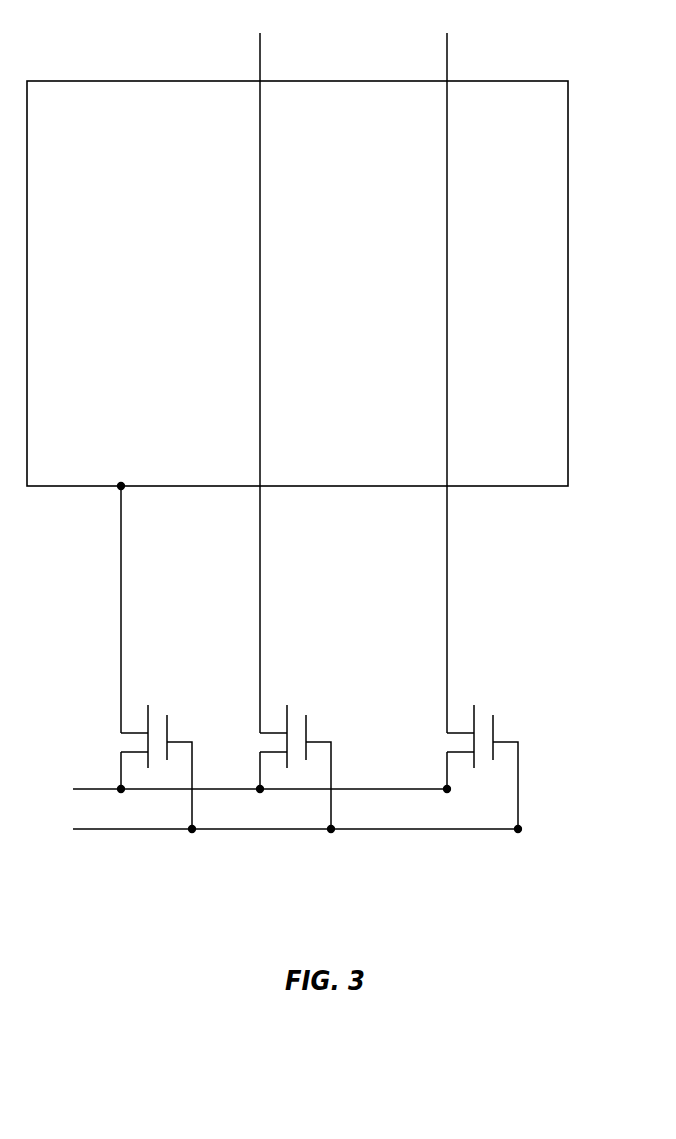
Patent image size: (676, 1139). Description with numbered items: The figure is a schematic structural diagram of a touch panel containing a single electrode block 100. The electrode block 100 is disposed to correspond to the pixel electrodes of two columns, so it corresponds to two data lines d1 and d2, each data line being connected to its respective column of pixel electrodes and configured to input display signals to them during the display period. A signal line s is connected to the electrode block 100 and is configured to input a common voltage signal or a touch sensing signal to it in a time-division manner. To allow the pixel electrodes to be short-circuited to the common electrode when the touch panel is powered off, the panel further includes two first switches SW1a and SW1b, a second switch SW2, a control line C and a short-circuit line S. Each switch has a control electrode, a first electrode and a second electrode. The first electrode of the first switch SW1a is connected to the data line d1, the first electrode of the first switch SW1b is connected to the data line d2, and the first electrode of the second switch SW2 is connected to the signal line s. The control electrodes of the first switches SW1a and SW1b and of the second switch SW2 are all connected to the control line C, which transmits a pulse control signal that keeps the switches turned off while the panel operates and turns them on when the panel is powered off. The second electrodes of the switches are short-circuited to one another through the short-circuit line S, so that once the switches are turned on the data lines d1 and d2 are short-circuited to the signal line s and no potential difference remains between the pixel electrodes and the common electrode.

The electrode block 100 is at (297, 283).
The data line d1 is at (260, 62).
The data line d2 is at (447, 63).
The signal line s is at (121, 582).
The short-circuit line S is at (95, 788).
The control line C is at (93, 832).
The second switch SW2 is at (159, 751).
The first switch SW1a is at (312, 751).
The first switch SW1b is at (498, 751).